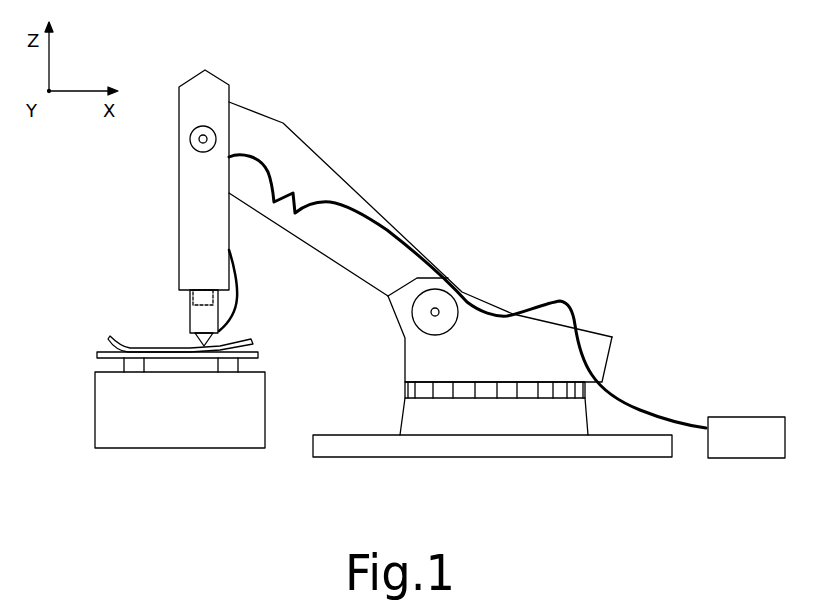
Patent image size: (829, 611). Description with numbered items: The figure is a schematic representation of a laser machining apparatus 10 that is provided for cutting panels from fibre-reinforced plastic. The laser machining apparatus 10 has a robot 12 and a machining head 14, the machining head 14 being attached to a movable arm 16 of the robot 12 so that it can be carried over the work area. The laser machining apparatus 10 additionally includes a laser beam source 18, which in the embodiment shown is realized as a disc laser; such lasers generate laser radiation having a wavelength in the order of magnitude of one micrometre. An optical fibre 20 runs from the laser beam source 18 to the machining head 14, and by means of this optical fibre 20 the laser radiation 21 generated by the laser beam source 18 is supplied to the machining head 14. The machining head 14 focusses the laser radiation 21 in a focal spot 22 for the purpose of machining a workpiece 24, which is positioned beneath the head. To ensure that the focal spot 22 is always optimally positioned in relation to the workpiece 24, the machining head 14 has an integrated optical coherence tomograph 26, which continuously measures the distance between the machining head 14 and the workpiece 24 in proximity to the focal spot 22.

The laser machining apparatus 10 is at (614, 225).
The robot 12 is at (396, 340).
The machining head 14 is at (190, 322).
The movable arm 16 is at (187, 181).
The laser beam source 18 is at (760, 423).
The optical fibre 20 is at (635, 400).
The laser radiation 21 is at (218, 337).
The focal spot 22 is at (240, 340).
The workpiece 24 is at (126, 338).
The optical coherence tomograph 26 is at (195, 297).